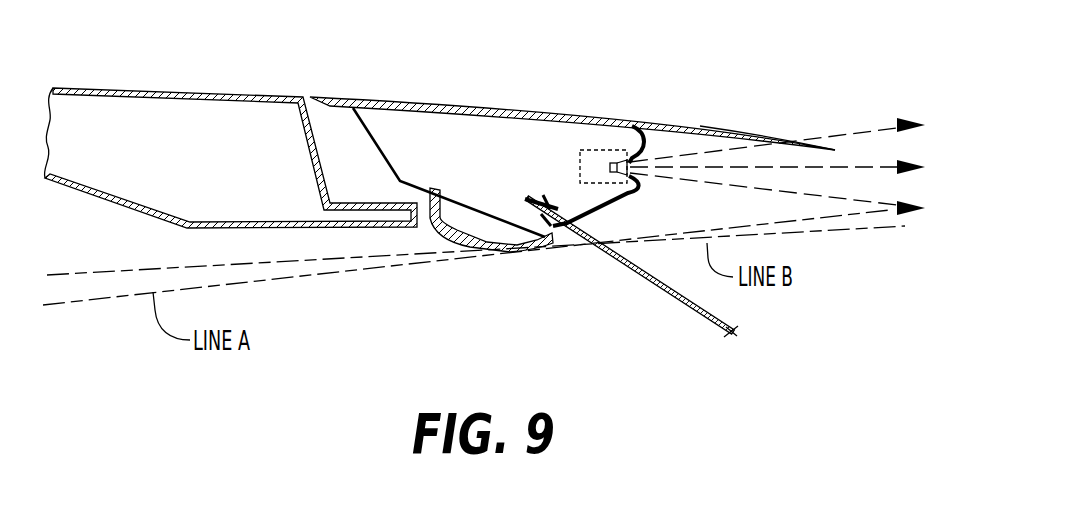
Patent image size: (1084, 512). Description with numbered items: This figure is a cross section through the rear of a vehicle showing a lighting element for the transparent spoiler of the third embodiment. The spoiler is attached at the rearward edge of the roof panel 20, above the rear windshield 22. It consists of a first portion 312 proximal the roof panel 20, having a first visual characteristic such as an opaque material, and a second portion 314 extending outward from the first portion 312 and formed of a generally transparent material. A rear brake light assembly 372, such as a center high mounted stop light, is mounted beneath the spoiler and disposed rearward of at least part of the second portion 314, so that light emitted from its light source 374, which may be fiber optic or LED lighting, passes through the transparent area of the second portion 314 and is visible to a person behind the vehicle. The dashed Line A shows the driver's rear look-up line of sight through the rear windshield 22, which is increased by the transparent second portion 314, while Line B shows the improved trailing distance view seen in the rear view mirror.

The roof panel 20 is at (183, 87).
The first portion 312 is at (470, 104).
The second portion 314 is at (717, 128).
The rear brake light assembly 372 is at (542, 143).
The light source 374 is at (580, 164).
The rear windshield 22 is at (645, 286).